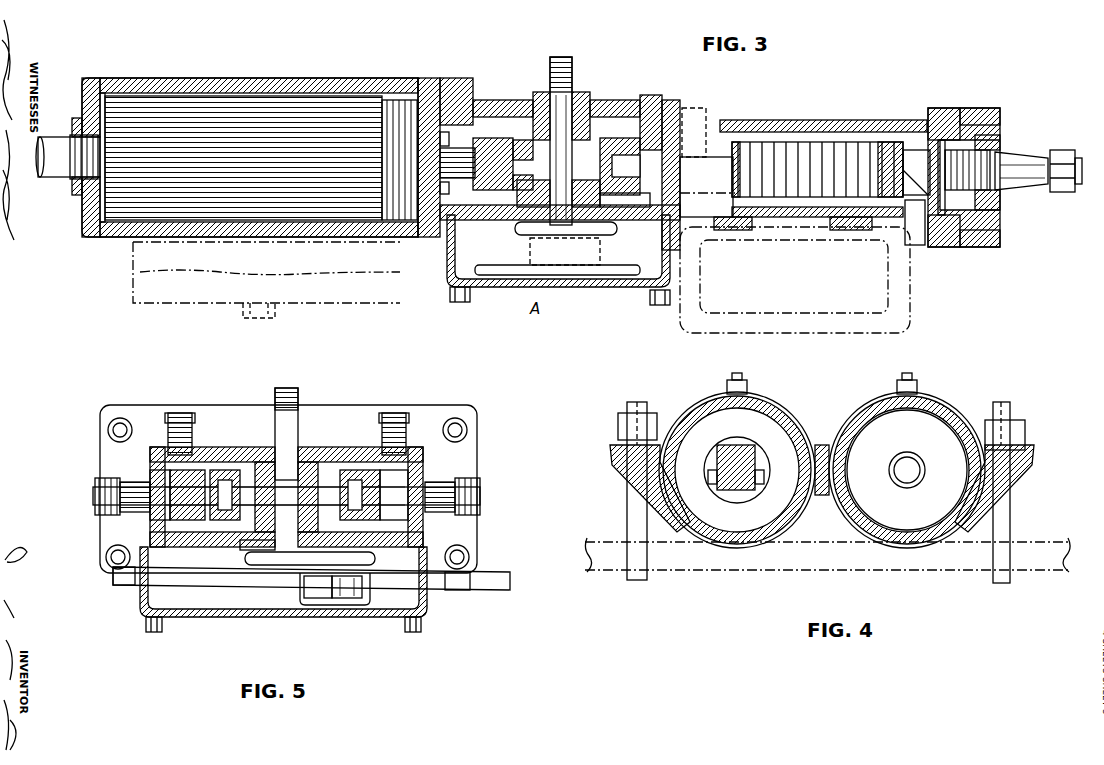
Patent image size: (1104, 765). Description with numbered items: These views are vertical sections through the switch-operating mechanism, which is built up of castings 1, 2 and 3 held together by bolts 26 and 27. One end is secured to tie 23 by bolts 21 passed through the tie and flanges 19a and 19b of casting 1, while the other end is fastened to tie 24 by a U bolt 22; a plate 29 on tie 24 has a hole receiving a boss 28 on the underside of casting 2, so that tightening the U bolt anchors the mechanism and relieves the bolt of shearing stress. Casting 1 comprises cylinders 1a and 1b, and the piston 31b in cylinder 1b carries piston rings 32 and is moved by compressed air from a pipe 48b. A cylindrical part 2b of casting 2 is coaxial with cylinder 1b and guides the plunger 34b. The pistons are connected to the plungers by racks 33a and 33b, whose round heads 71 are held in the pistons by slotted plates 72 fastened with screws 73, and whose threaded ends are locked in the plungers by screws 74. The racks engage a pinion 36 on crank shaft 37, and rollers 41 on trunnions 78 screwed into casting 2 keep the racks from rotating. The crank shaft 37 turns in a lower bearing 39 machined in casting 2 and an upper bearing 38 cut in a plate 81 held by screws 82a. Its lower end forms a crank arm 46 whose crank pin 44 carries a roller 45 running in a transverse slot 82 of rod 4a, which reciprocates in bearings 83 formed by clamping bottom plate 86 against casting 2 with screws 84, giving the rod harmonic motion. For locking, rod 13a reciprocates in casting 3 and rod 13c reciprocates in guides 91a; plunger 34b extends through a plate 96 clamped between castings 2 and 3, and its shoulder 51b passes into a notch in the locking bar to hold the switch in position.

In FIG. 3, the casting 1 is at (174, 54).
In FIG. 4, the cylinder 1a is at (700, 405).
In FIG. 3, the cylinder 1b is at (145, 176).
In FIG. 4, the cylinder 1b is at (930, 398).
In FIG. 3, the casting 2 is at (740, 120).
In FIG. 5, the casting 2 is at (477, 526).
In FIG. 3, the cylindrical part 2b is at (778, 126).
In FIG. 3, the casting 3 is at (998, 240).
In FIG. 3, the rod 4a is at (575, 276).
In FIG. 5, the rod 4a is at (497, 590).
In FIG. 3, the lock rod 13a is at (977, 248).
In FIG. 3, the rod 13c is at (978, 108).
In FIG. 4, the flange 19a is at (610, 452).
In FIG. 4, the flange 19b is at (1034, 452).
In FIG. 3, the bolts 21 is at (265, 313).
In FIG. 4, the bolts 21 is at (627, 512).
In FIG. 3, the U bolt 22 is at (862, 326).
In FIG. 3, the tie 23 is at (177, 300).
In FIG. 4, the tie 23 is at (827, 555).
In FIG. 3, the tie 24 is at (752, 307).
In FIG. 5, the bolts 26 is at (108, 430).
In FIG. 3, the bolts 27 is at (1080, 190).
In FIG. 3, the boss 28 is at (812, 229).
In FIG. 3, the plate 29 is at (733, 236).
In FIG. 3, the piston 31b is at (392, 170).
In FIG. 4, the piston 31b is at (940, 435).
In FIG. 3, the piston rings 32 is at (425, 92).
In FIG. 5, the rack 33a is at (205, 470).
In FIG. 3, the rack 33b is at (815, 140).
In FIG. 5, the rack 33b is at (372, 478).
In FIG. 3, the plunger 34b is at (1005, 150).
In FIG. 3, the pinion 36 is at (622, 145).
In FIG. 5, the pinion 36 is at (226, 478).
In FIG. 3, the crank shaft 37 is at (575, 96).
In FIG. 5, the crank shaft 37 is at (245, 520).
In FIG. 3, the upper bearing 38 is at (598, 108).
In FIG. 5, the upper bearing 38 is at (313, 438).
In FIG. 3, the lower bearing 39 is at (603, 200).
In FIG. 5, the lower bearing 39 is at (248, 549).
In FIG. 5, the rollers 41 is at (175, 520).
In FIG. 5, the crank pin 44 is at (335, 606).
In FIG. 3, the roller 45 is at (600, 252).
In FIG. 5, the roller 45 is at (302, 580).
In FIG. 3, the crank arm 46 is at (515, 229).
In FIG. 5, the crank arm 46 is at (375, 559).
In FIG. 4, the pipe 48b is at (921, 463).
In FIG. 3, the shoulder 51b is at (1000, 203).
In FIG. 4, the round heads 71 is at (736, 492).
In FIG. 3, the plates 72 is at (449, 138).
In FIG. 4, the plates 72 is at (752, 449).
In FIG. 3, the screws 73 is at (449, 190).
In FIG. 4, the screws 73 is at (764, 480).
In FIG. 3, the screws 74 is at (900, 200).
In FIG. 5, the trunnions 78 is at (98, 500).
In FIG. 3, the plate 81 is at (500, 111).
In FIG. 5, the plate 81 is at (230, 447).
In FIG. 5, the transverse slot 82 is at (334, 588).
In FIG. 5, the screws 82a is at (183, 414).
In FIG. 5, the bearings 83 is at (118, 586).
In FIG. 3, the screws 84 is at (448, 295).
In FIG. 5, the screws 84 is at (158, 633).
In FIG. 3, the bottom plate 86 is at (506, 288).
In FIG. 5, the bottom plate 86 is at (257, 618).
In FIG. 3, the guides 91a is at (952, 108).
In FIG. 3, the plate 96 is at (941, 248).